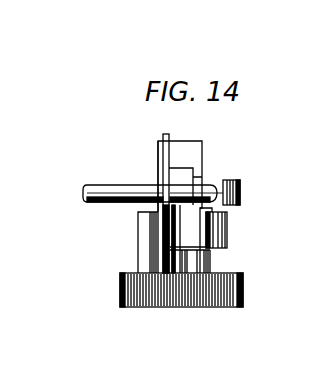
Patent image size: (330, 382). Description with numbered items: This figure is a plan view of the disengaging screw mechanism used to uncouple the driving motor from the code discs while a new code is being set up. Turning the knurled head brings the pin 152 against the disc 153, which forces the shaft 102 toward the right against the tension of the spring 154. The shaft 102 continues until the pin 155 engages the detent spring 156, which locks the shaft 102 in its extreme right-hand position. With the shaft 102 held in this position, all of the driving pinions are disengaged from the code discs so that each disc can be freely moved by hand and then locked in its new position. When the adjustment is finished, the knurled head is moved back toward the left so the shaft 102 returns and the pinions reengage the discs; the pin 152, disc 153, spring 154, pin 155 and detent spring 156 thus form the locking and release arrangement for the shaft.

The shaft 102 is at (101, 205).
The pin 152 is at (140, 238).
The disc 153 is at (160, 152).
The spring 154 is at (234, 180).
The pin 155 is at (210, 267).
The detent spring 156 is at (226, 235).